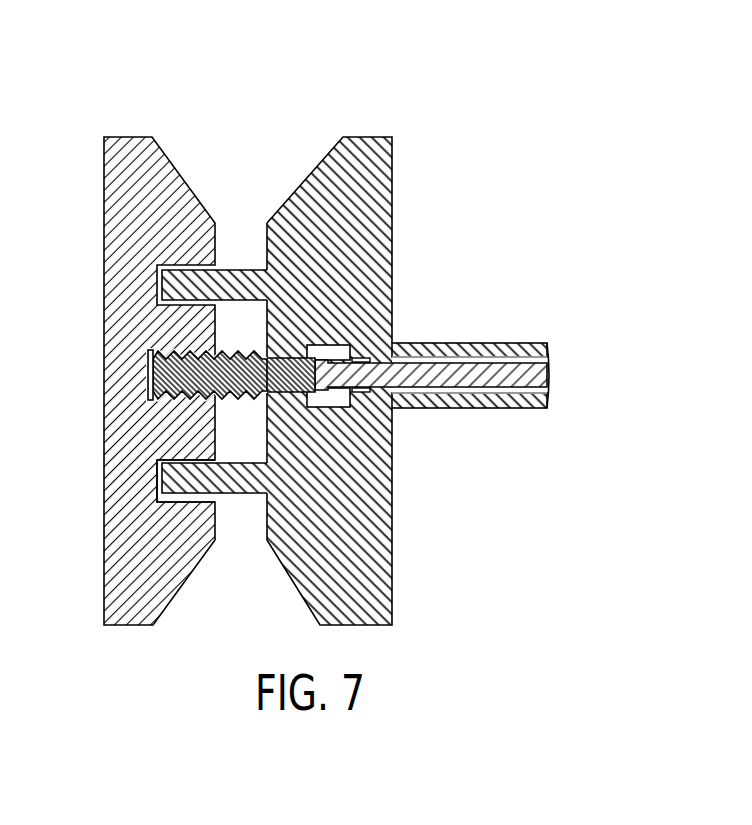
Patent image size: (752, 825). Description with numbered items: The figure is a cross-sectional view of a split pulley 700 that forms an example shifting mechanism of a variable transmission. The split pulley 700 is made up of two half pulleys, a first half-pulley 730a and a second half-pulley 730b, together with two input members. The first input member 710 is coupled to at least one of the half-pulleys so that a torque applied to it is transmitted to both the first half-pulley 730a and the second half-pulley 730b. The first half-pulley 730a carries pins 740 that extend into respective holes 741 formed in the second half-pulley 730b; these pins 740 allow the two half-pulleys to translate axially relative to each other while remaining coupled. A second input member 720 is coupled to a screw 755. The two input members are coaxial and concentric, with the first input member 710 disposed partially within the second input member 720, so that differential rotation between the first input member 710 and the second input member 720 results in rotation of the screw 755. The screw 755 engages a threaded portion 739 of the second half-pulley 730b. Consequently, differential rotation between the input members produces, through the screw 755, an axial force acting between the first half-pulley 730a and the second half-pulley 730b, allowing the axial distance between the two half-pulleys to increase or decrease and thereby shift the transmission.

The split pulley 700 is at (538, 177).
The first input member 710 is at (532, 397).
The second input member 720 is at (456, 370).
The first half-pulley 730a is at (362, 135).
The second half-pulley 730b is at (125, 135).
The threaded portion 739 is at (168, 407).
The pins 740 is at (255, 480).
The holes 741 is at (184, 514).
The screw 755 is at (185, 413).